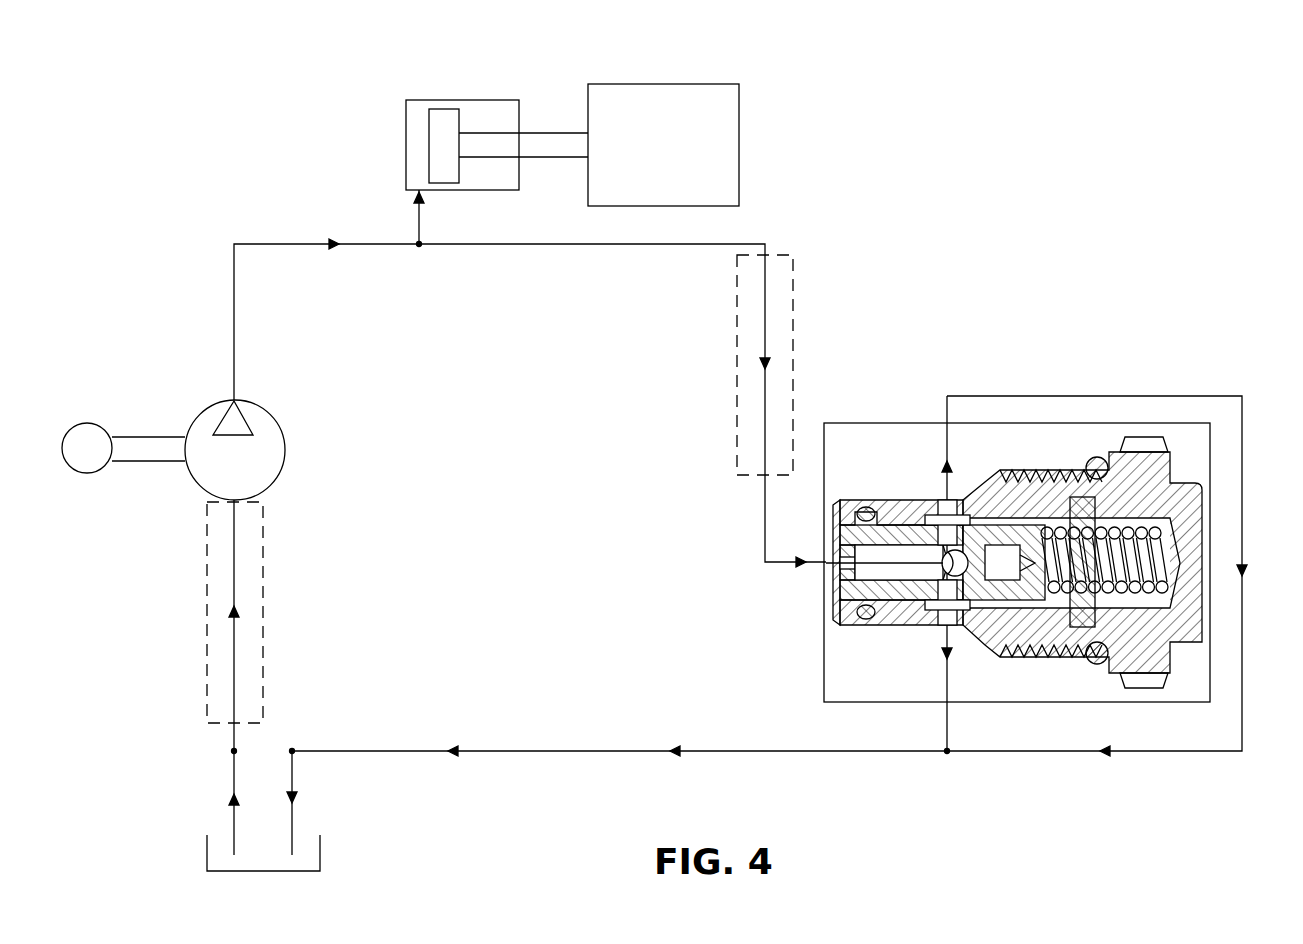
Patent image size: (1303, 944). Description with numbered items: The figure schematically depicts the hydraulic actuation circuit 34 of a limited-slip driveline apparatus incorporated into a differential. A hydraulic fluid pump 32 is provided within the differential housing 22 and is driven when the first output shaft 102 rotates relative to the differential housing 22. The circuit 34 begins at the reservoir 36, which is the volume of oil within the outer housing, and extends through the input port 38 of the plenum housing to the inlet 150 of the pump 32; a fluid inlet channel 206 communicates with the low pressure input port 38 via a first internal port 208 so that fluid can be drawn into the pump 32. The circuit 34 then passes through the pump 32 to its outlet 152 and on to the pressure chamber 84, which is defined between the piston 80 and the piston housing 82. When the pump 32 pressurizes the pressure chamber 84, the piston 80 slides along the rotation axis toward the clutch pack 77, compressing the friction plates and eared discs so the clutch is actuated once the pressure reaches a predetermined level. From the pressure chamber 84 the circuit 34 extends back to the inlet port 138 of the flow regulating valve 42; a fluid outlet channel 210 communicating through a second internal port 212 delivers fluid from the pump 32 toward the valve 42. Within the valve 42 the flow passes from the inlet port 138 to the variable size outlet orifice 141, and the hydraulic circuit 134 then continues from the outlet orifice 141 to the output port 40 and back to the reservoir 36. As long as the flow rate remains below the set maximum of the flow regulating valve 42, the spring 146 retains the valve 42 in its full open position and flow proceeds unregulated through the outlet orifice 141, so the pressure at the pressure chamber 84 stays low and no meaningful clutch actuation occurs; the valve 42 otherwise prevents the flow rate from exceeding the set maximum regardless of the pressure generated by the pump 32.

The differential housing 22 is at (87, 473).
The hydraulic fluid pump 32 is at (288, 451).
The hydraulic actuation circuit 34 is at (281, 236).
The reservoir 36 is at (322, 853).
The input port 38 is at (233, 751).
The output port 40 is at (292, 750).
The flow regulating valve 42 is at (1020, 515).
The clutch pack 77 is at (664, 84).
The piston 80 is at (533, 158).
The piston housing 82 is at (485, 99).
The pressure chamber 84 is at (407, 146).
The first output shaft 102 is at (109, 482).
The hydraulic circuit 134 is at (954, 498).
The inlet port 138 is at (835, 566).
The variable size outlet orifice 141 is at (935, 492).
The spring 146 is at (1167, 532).
The inlet 150 is at (243, 501).
The outlet 152 is at (238, 401).
The fluid inlet channel 206 is at (315, 612).
The first internal port 208 is at (263, 616).
The fluid outlet channel 210 is at (699, 365).
The second internal port 212 is at (737, 337).